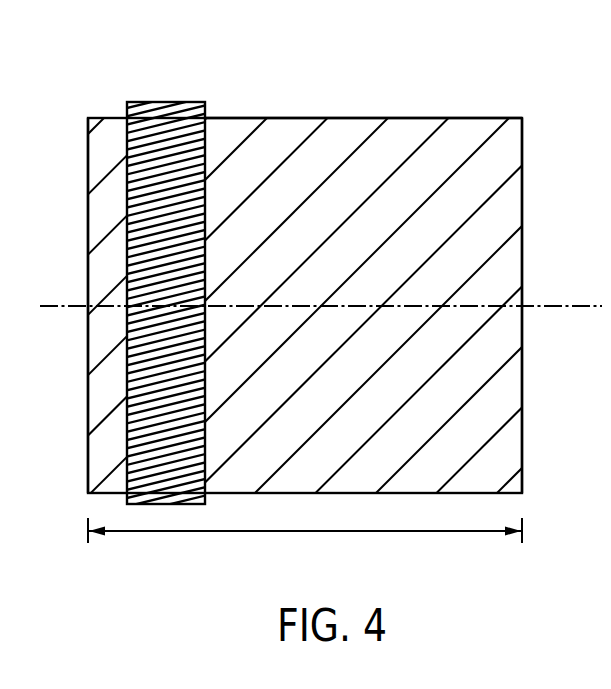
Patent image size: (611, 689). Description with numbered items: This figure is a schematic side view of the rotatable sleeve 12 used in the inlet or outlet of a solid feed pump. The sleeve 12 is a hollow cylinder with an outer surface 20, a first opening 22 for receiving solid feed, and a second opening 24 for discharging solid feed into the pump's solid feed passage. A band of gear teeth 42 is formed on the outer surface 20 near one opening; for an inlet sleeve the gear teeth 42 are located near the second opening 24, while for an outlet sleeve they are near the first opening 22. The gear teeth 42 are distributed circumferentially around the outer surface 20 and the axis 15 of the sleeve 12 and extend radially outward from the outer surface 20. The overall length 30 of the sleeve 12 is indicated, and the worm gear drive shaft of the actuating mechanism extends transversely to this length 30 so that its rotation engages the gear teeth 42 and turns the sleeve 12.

The rotatable sleeve 12 is at (433, 117).
The outer surface 20 is at (317, 117).
The first opening 22 is at (523, 276).
The second opening 24 is at (86, 279).
The gear teeth 42 is at (167, 102).
The axis 15 is at (552, 307).
The length 30 is at (303, 532).